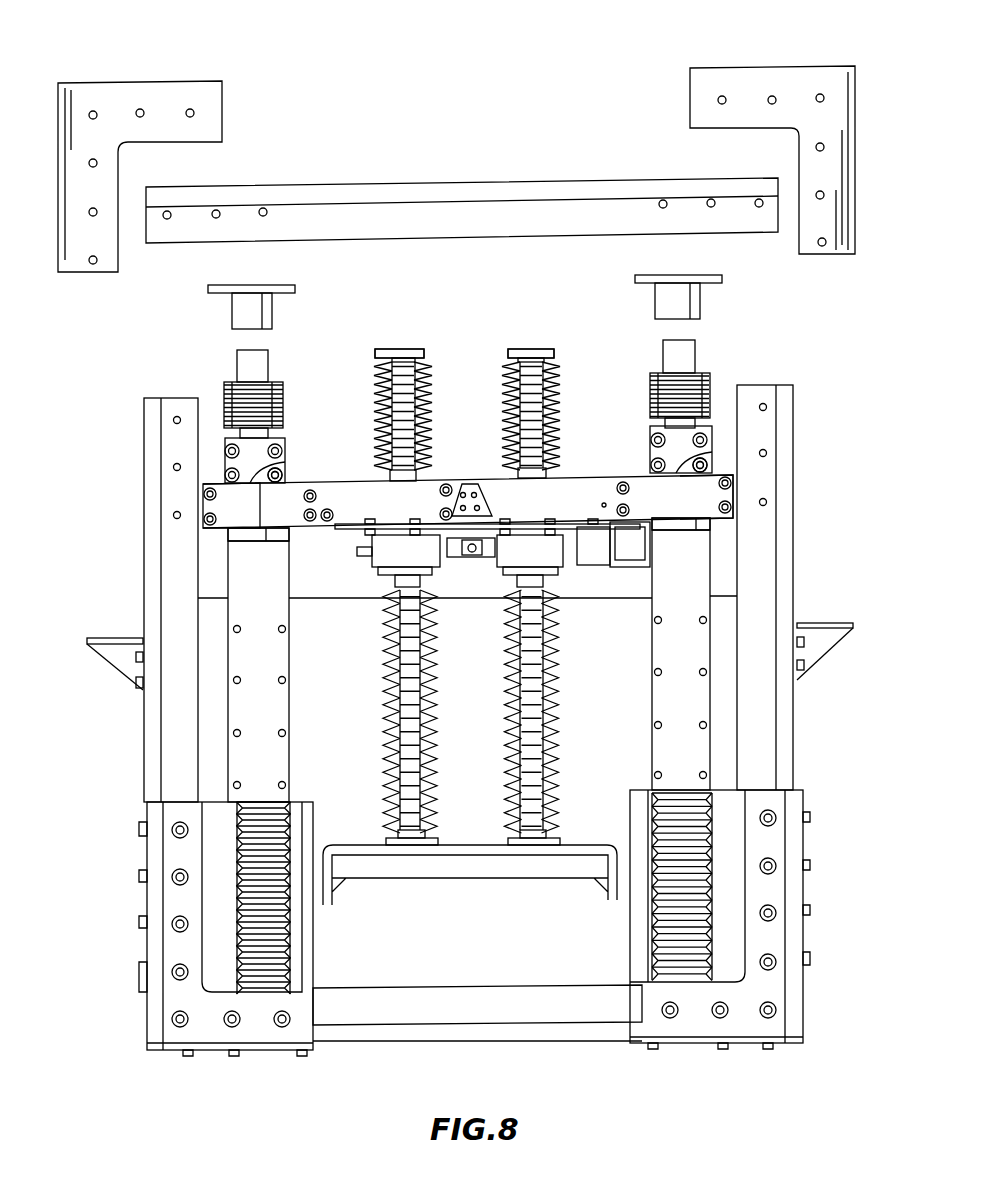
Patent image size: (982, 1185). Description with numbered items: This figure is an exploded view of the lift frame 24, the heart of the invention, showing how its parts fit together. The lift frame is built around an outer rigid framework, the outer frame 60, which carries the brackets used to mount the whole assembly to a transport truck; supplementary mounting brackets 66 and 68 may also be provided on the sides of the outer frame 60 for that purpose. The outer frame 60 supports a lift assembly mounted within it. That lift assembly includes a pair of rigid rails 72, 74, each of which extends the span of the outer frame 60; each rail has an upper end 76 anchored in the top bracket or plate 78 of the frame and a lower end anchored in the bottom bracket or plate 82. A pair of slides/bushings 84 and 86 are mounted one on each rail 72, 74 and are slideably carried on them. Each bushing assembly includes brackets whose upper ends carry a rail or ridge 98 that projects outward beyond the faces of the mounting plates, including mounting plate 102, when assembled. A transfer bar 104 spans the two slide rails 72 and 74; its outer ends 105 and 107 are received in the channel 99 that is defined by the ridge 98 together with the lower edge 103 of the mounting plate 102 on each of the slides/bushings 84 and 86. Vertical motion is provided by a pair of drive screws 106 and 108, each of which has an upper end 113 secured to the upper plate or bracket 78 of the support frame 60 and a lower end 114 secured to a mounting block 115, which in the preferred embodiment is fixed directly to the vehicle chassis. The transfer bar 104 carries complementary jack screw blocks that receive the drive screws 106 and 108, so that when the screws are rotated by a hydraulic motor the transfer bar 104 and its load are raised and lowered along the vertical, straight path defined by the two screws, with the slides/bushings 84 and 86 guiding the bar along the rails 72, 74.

The lift frame 24 is at (527, 74).
The top bracket or plate 78 is at (405, 192).
The outer frame 60 is at (110, 272).
The upper end 76 is at (252, 350).
The rail 72 is at (258, 368).
The rail 74 is at (690, 358).
The upper end 113 is at (410, 352).
The drive screw 106 is at (433, 375).
The drive screw 108 is at (556, 393).
The mounting plate 102 is at (255, 453).
The lower edge 103 is at (262, 474).
The transfer bar 104 is at (476, 472).
The outer end 105 is at (233, 506).
The outer end 107 is at (733, 494).
The channel 99 is at (215, 535).
The ridge 98 is at (265, 541).
The slide/bushing 84 is at (268, 714).
The slide/bushing 86 is at (659, 648).
The supplementary mounting bracket 66 is at (127, 658).
The supplementary mounting bracket 68 is at (820, 643).
The lower end 114 is at (410, 848).
The mounting block 115 is at (500, 865).
The bottom bracket or plate 82 is at (388, 1043).